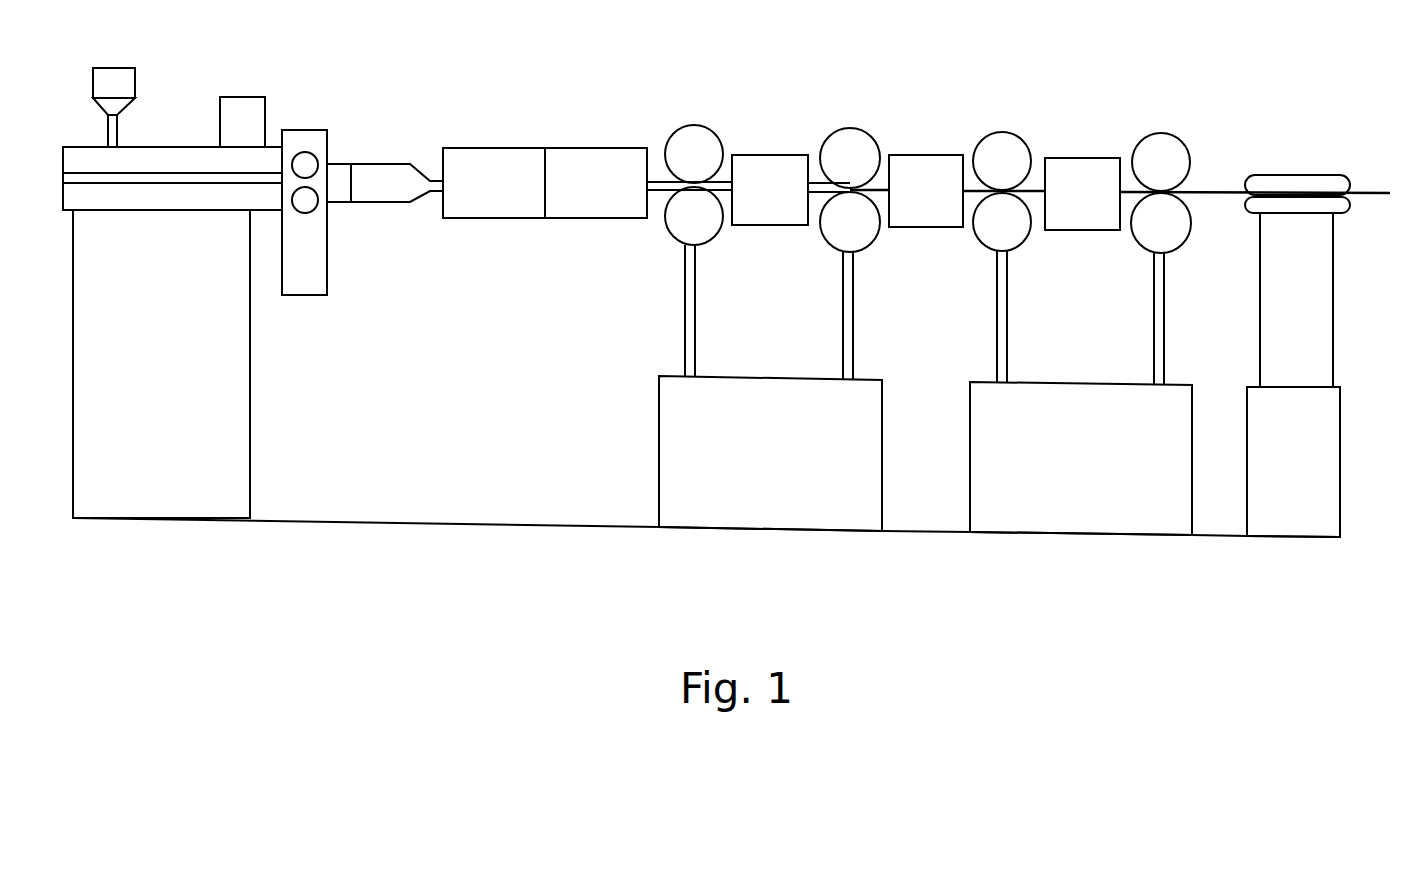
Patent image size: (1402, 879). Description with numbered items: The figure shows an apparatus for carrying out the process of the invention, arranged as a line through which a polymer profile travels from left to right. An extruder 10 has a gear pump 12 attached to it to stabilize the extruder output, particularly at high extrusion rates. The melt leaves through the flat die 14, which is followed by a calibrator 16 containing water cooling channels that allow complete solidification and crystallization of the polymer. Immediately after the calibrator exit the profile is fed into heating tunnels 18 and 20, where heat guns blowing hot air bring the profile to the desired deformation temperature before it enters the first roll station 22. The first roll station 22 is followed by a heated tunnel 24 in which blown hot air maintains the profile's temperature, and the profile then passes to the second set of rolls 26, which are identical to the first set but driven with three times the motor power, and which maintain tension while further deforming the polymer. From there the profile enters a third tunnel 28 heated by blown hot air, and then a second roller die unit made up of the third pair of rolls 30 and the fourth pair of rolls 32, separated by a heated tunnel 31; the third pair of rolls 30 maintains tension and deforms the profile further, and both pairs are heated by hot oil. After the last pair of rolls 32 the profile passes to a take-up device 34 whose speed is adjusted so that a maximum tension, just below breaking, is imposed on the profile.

The extruder 10 is at (180, 364).
The gear pump 12 is at (287, 135).
The flat die 14 is at (338, 190).
The calibrator 16 is at (378, 172).
The heating tunnel 18 is at (508, 199).
The heating tunnel 20 is at (612, 199).
The first roll station 22 is at (693, 137).
The heated tunnel 24 is at (786, 206).
The second set of rolls 26 is at (850, 138).
The third tunnel 28 is at (941, 207).
The third pair of rolls 30 is at (1002, 140).
The heated tunnel 31 is at (1098, 209).
The fourth pair of rolls 32 is at (1160, 143).
The take-up device 34 is at (1307, 180).